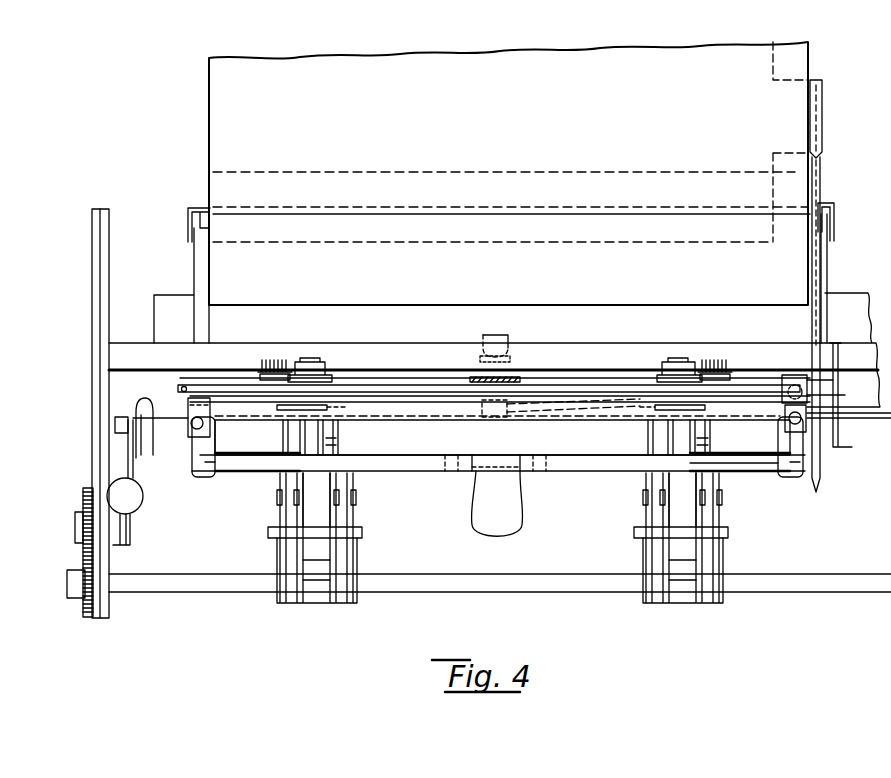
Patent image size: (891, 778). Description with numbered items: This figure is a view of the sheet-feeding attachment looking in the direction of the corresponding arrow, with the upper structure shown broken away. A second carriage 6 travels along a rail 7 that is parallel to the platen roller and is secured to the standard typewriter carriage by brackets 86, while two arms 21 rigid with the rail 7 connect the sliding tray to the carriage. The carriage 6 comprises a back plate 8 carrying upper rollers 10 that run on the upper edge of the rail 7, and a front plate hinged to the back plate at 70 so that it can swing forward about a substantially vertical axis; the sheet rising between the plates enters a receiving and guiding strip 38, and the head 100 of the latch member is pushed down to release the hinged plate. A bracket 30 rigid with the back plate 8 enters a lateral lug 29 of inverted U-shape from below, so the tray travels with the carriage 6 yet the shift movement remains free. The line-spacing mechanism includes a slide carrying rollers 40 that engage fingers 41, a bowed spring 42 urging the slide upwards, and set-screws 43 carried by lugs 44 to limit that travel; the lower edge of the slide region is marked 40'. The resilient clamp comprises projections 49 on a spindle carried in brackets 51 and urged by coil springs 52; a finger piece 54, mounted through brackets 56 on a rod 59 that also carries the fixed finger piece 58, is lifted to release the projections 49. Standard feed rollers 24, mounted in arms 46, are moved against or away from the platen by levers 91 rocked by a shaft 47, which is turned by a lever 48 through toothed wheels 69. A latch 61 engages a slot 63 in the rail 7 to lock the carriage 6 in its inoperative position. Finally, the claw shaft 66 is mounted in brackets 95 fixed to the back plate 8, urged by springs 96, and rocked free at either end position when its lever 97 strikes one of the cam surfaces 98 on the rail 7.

The second carriage 6 is at (169, 360).
The rail 7 is at (362, 378).
The back plate 8 is at (544, 383).
The upper rollers 10 is at (318, 360).
The arms 21 is at (196, 262).
The feed rollers 24 is at (300, 436).
The lateral lug 29 is at (822, 132).
The bracket 30 is at (821, 190).
The receiving and guiding strip 38 is at (512, 376).
The rollers 40 is at (502, 427).
The carriage box bottom 40' is at (502, 436).
The fingers 41 is at (310, 405).
The bowed spring 42 is at (598, 412).
The set-screws 43 is at (190, 426).
The lugs 44 is at (190, 434).
The arms 46 is at (345, 480).
The shaft 47 is at (466, 580).
The lever 48 is at (132, 538).
The projections 49 is at (338, 437).
The brackets 51 is at (208, 445).
The coil springs 52 is at (744, 473).
The finger piece 54 is at (250, 472).
The brackets 56 is at (447, 472).
The fixed finger piece 58 is at (496, 503).
The rod 59 is at (426, 465).
The latch 61 is at (836, 358).
The slot 63 is at (836, 342).
The shaft 66 is at (600, 352).
The toothed wheels 69 is at (82, 502).
The hinge 70 is at (186, 384).
The brackets 86 is at (109, 258).
The levers 91 is at (305, 555).
The brackets 95 is at (264, 358).
The springs 96 is at (284, 358).
The lever 97 is at (480, 358).
The cam surfaces 98 is at (498, 335).
The head 100 is at (828, 389).